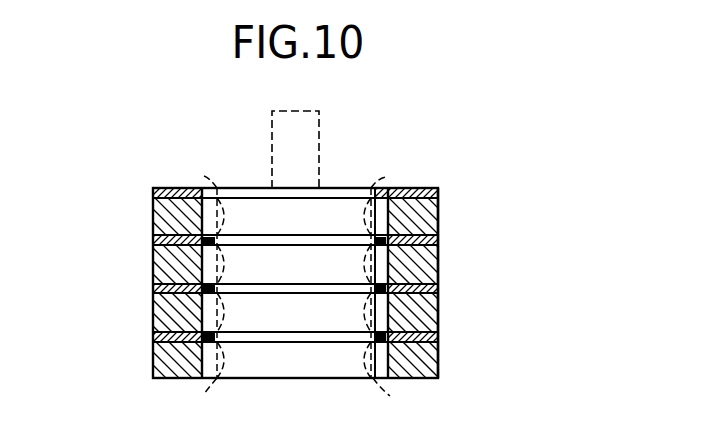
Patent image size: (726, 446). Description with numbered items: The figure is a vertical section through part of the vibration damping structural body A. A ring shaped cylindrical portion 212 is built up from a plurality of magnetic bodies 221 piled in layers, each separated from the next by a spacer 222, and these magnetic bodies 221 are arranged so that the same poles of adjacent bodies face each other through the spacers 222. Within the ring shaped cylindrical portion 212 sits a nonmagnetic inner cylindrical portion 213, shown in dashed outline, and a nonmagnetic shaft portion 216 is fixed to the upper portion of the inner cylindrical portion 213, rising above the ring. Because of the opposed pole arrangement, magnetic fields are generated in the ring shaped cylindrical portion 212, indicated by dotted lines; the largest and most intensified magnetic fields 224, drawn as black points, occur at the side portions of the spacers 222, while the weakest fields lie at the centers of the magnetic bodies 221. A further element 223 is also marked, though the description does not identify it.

The ring shaped cylindrical portion 212 is at (152, 266).
The inner cylindrical portion 213 is at (250, 188).
The shaft portion 216 is at (320, 142).
The magnetic bodies 221 is at (438, 217).
The spacers 222 is at (440, 187).
The right dashed boundary 223 is at (363, 190).
The magnetic fields 224 is at (438, 252).
The vibration damping structural body A is at (438, 307).